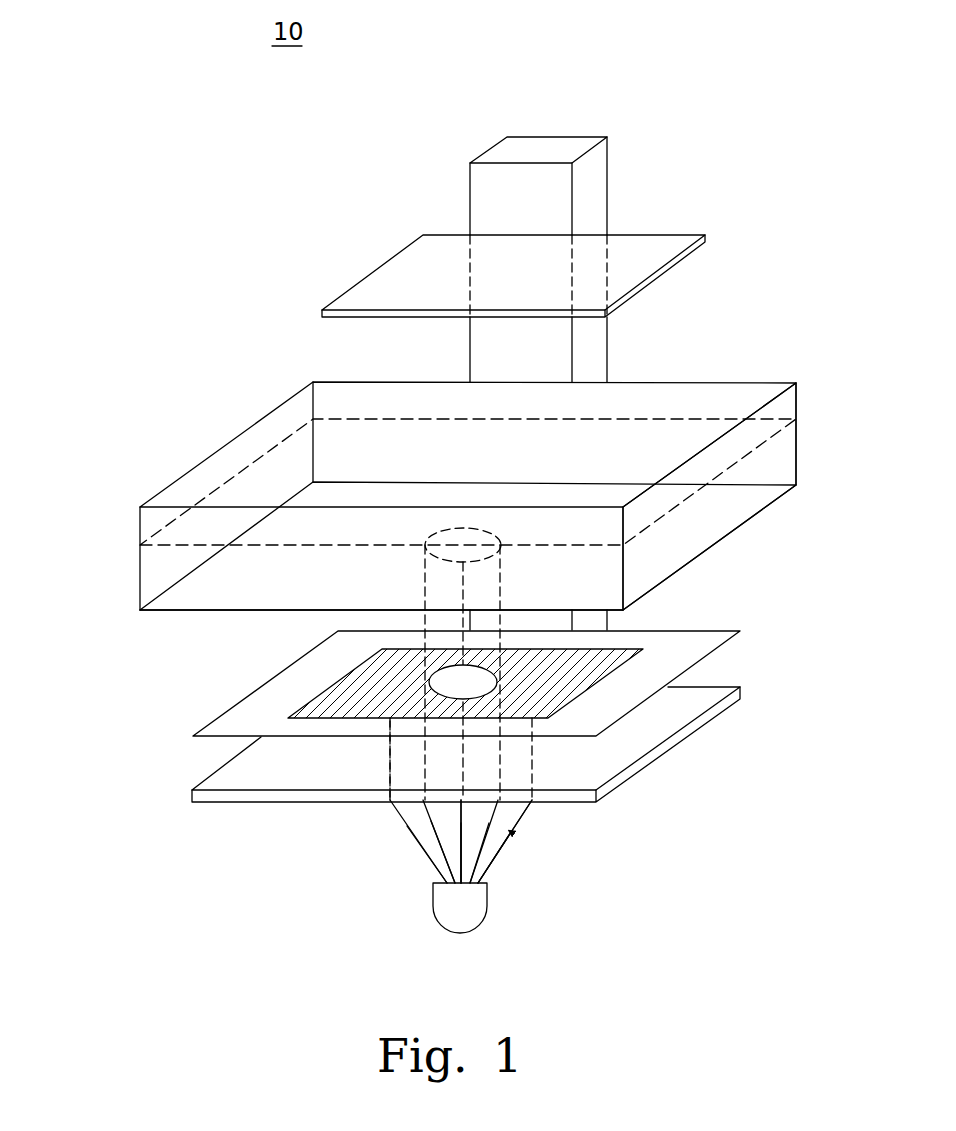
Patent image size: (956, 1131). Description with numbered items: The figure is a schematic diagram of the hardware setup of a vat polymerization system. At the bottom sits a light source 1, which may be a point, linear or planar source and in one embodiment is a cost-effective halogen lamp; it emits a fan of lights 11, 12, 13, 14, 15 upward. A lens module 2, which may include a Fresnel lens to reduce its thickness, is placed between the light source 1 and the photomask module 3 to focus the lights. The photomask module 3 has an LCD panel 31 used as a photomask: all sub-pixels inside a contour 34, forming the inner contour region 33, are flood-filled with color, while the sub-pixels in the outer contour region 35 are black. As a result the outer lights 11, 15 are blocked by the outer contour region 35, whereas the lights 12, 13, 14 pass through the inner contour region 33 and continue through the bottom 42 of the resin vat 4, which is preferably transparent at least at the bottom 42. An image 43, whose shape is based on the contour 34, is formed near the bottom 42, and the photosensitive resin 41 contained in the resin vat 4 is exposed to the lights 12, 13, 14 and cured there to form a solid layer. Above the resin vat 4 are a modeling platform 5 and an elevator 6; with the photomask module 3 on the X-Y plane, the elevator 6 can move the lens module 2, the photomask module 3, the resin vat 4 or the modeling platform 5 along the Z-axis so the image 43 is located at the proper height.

The light source 1 is at (487, 912).
The light 11 is at (525, 813).
The light 12 is at (500, 758).
The light 13 is at (460, 858).
The light 14 is at (423, 808).
The light 15 is at (390, 775).
The lens module 2 is at (697, 719).
The photomask module 3 is at (703, 660).
The LCD panel 31 is at (320, 693).
The inner contour region 33 is at (442, 683).
The contour 34 is at (393, 727).
The outer contour region 35 is at (563, 688).
The resin vat 4 is at (140, 530).
The photosensitive resin 41 is at (720, 506).
The bottom 42 is at (207, 608).
The image 43 is at (452, 562).
The modeling platform 5 is at (667, 235).
The elevator 6 is at (553, 137).